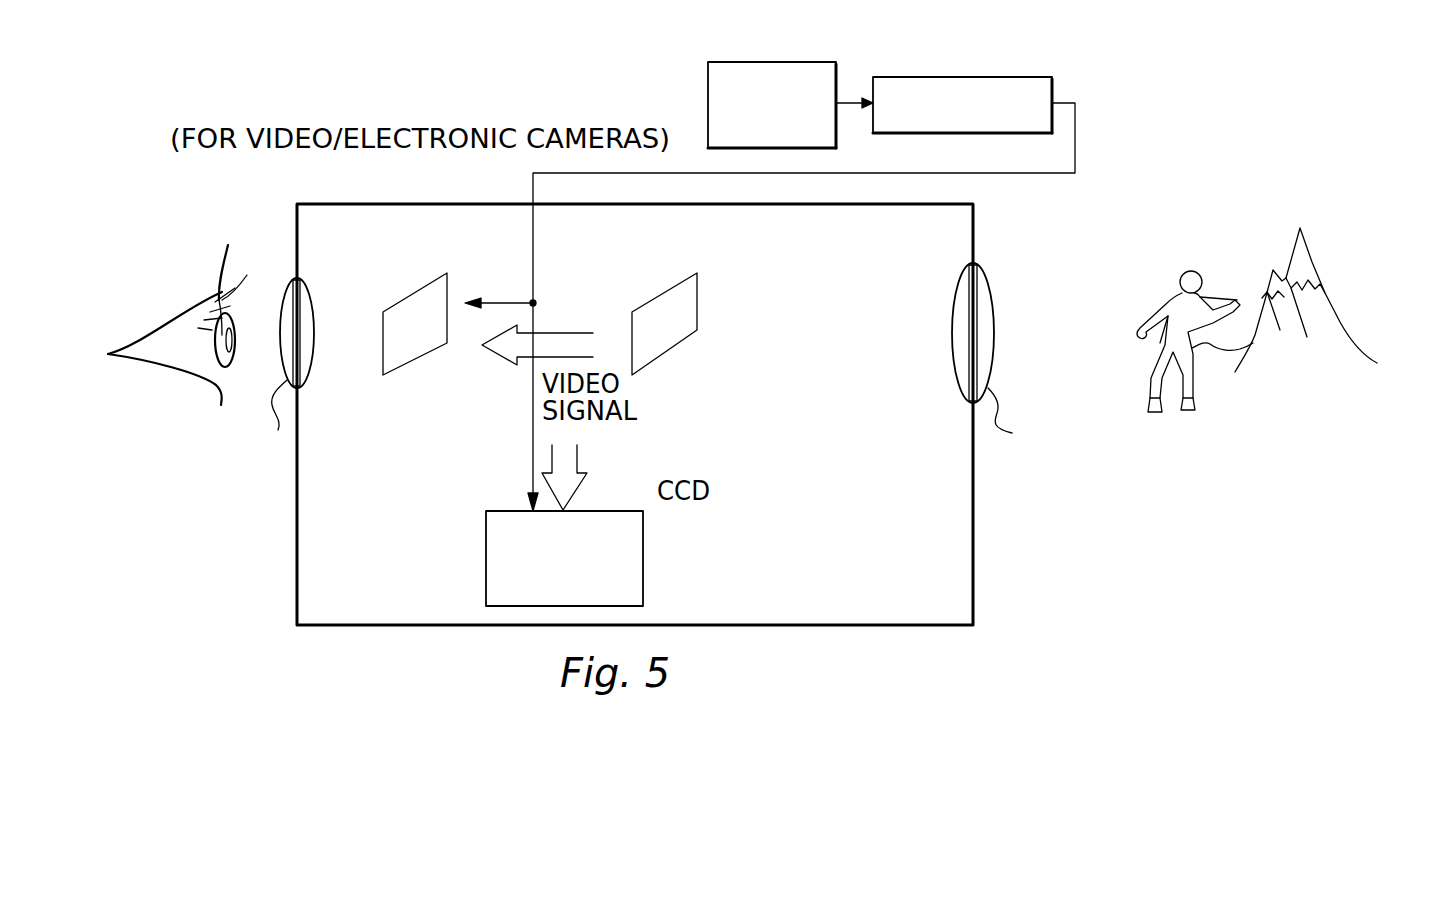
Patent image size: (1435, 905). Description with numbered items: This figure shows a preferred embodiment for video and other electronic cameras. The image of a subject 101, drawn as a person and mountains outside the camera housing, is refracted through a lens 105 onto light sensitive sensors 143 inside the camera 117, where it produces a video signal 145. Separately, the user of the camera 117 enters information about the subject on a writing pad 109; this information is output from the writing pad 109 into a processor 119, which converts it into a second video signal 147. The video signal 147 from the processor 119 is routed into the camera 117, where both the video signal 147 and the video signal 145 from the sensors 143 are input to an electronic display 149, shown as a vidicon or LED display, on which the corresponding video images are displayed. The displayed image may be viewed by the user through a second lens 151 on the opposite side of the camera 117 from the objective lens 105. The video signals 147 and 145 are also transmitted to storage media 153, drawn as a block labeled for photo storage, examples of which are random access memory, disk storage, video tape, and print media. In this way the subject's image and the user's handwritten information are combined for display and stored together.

The subject 101 is at (1293, 218).
The lens 105 is at (982, 292).
The writing pad 109 is at (718, 110).
The camera 117 is at (977, 535).
The processor 119 is at (1047, 88).
The light sensitive sensors 143 is at (687, 325).
The video signal 145 is at (562, 333).
The video signal 147 is at (535, 262).
The electronic display 149 is at (385, 350).
The lens 151 is at (282, 290).
The storage media 153 is at (642, 563).